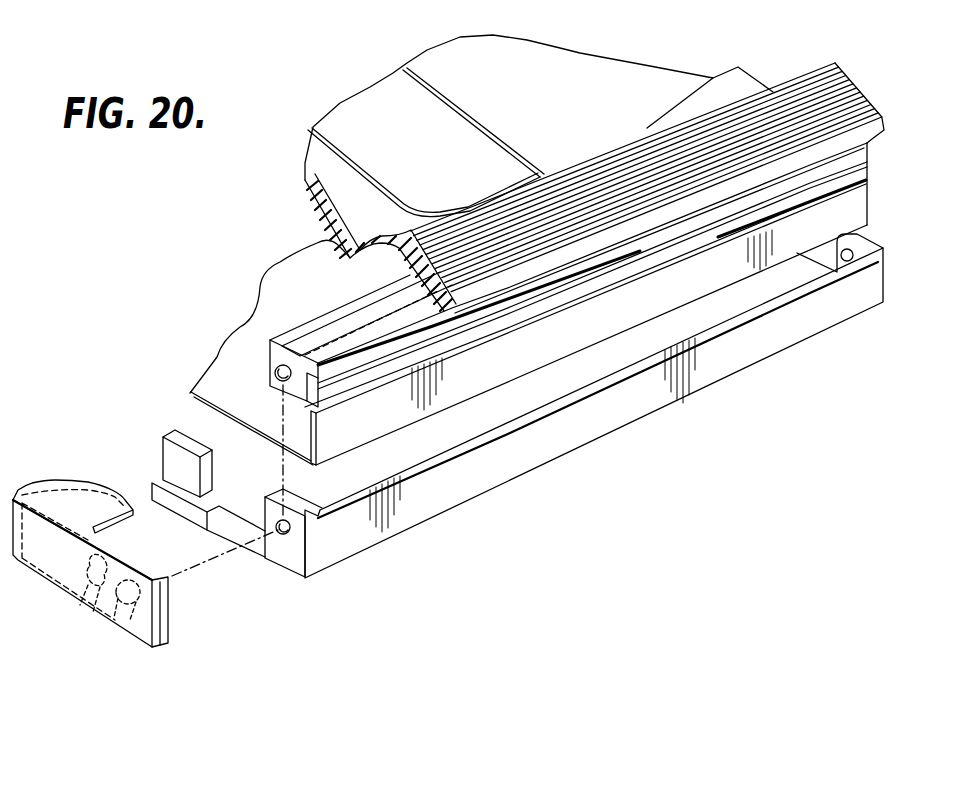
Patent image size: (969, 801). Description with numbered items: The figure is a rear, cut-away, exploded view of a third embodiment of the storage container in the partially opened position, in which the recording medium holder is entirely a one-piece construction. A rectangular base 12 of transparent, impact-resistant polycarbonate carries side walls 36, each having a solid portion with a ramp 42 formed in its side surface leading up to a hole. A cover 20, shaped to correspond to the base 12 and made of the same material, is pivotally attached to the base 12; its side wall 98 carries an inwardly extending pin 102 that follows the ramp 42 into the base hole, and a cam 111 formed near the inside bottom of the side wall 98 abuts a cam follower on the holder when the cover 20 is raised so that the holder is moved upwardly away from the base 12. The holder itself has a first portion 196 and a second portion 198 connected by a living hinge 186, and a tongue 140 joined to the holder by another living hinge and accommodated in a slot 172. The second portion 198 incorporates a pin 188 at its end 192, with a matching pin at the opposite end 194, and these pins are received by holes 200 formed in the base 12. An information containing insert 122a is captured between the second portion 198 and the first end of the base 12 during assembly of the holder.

The base 12 is at (437, 490).
The cover 20 is at (68, 497).
The side wall 36 is at (163, 455).
The ramp 42 is at (263, 516).
The side wall 98 is at (150, 618).
The pin 102 is at (121, 606).
The cam 111 is at (85, 598).
The information containing insert 122a is at (545, 330).
The tongue 140 is at (385, 86).
The slot 172 is at (456, 110).
The living hinge 186 is at (633, 237).
The pin 188 is at (272, 373).
The end of second portion 192 is at (268, 338).
The end of second portion 194 is at (866, 180).
The first portion of holder 196 is at (433, 327).
The second portion of holder 198 is at (610, 80).
The holes 200 is at (275, 533).